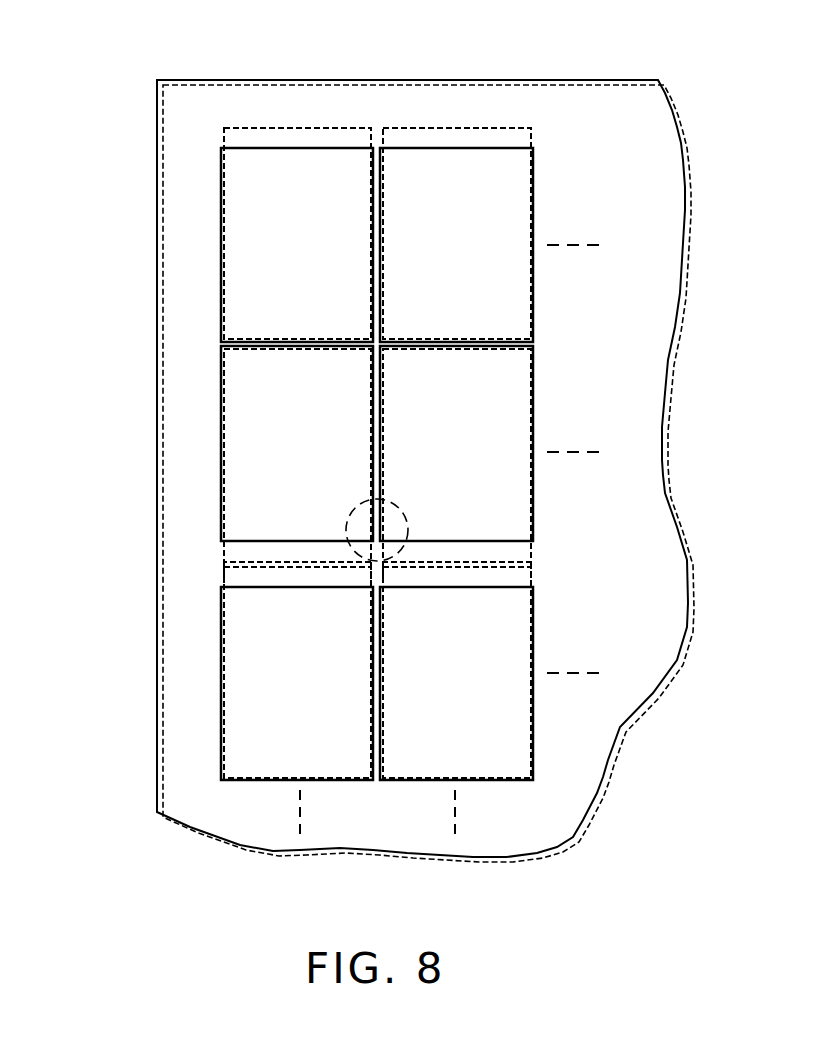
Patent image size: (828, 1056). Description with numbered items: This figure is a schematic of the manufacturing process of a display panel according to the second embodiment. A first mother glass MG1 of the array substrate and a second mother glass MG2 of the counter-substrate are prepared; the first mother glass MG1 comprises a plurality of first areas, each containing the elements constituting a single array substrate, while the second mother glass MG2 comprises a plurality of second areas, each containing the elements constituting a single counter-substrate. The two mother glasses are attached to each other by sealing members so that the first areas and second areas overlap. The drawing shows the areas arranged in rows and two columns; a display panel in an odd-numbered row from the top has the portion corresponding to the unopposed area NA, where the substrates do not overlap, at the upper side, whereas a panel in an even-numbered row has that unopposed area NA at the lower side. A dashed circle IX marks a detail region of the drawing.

The first mother glass MG1 is at (163, 159).
The second mother glass MG2 is at (157, 247).
The unopposed area NA is at (264, 138).
The enlarged detail region shown in FIG. 9 IX is at (408, 519).